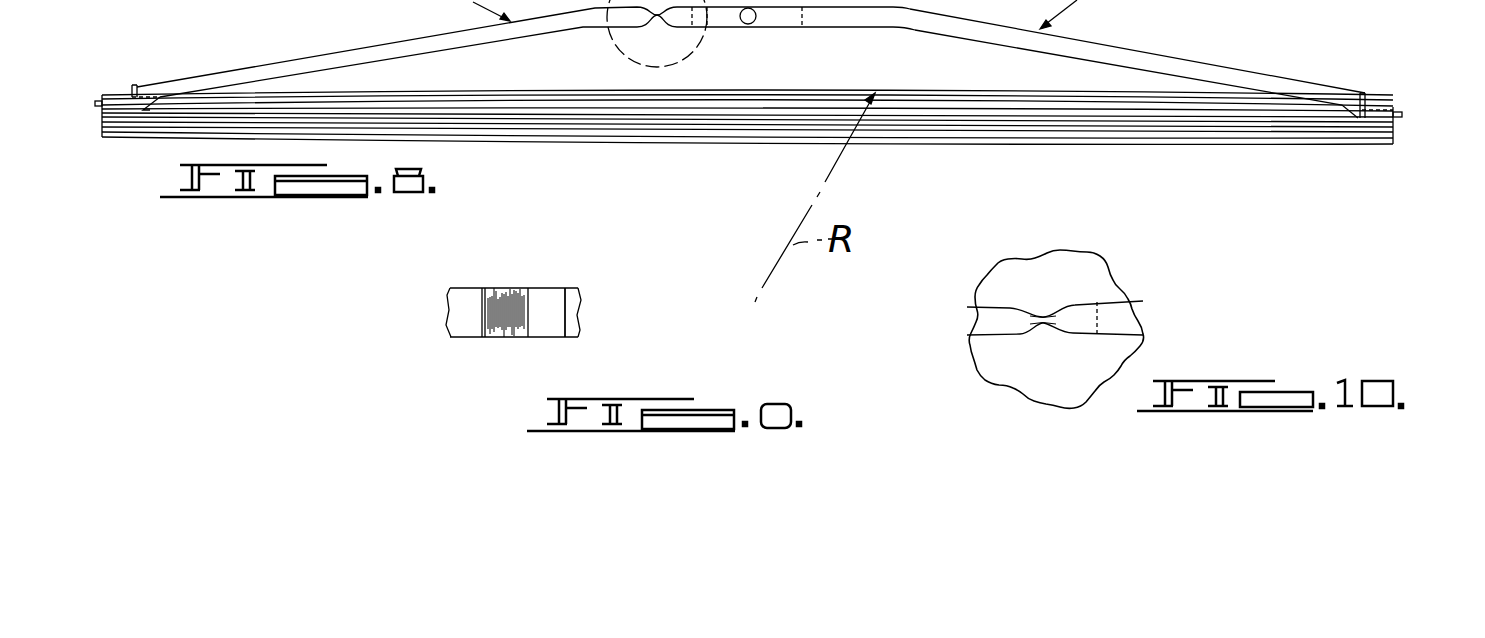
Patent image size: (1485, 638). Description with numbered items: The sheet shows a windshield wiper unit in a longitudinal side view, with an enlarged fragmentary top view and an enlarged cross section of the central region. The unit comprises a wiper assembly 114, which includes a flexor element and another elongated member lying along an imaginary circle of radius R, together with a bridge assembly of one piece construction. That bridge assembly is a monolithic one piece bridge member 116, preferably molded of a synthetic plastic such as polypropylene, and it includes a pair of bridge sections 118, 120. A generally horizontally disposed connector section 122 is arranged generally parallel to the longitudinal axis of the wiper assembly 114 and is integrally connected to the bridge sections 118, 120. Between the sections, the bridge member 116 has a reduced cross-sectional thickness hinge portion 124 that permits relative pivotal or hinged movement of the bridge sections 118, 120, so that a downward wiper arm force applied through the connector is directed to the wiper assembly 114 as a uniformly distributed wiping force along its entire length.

In FIG. 8, the wiper assembly 114 is at (637, 143).
In FIG. 9, the one piece bridge member 116 is at (578, 288).
In FIG. 10, the one piece bridge member 116 is at (1117, 300).
In FIG. 8, the bridge section 118 is at (1117, 53).
In FIG. 9, the bridge section 118 is at (577, 310).
In FIG. 10, the bridge section 118 is at (1123, 320).
In FIG. 8, the bridge section 120 is at (442, 45).
In FIG. 9, the bridge section 120 is at (447, 310).
In FIG. 10, the bridge section 120 is at (977, 313).
In FIG. 8, the connector section 122 is at (897, 20).
In FIG. 8, the hinge portion 124 is at (657, 28).
In FIG. 9, the hinge portion 124 is at (520, 330).
In FIG. 10, the hinge portion 124 is at (1048, 323).